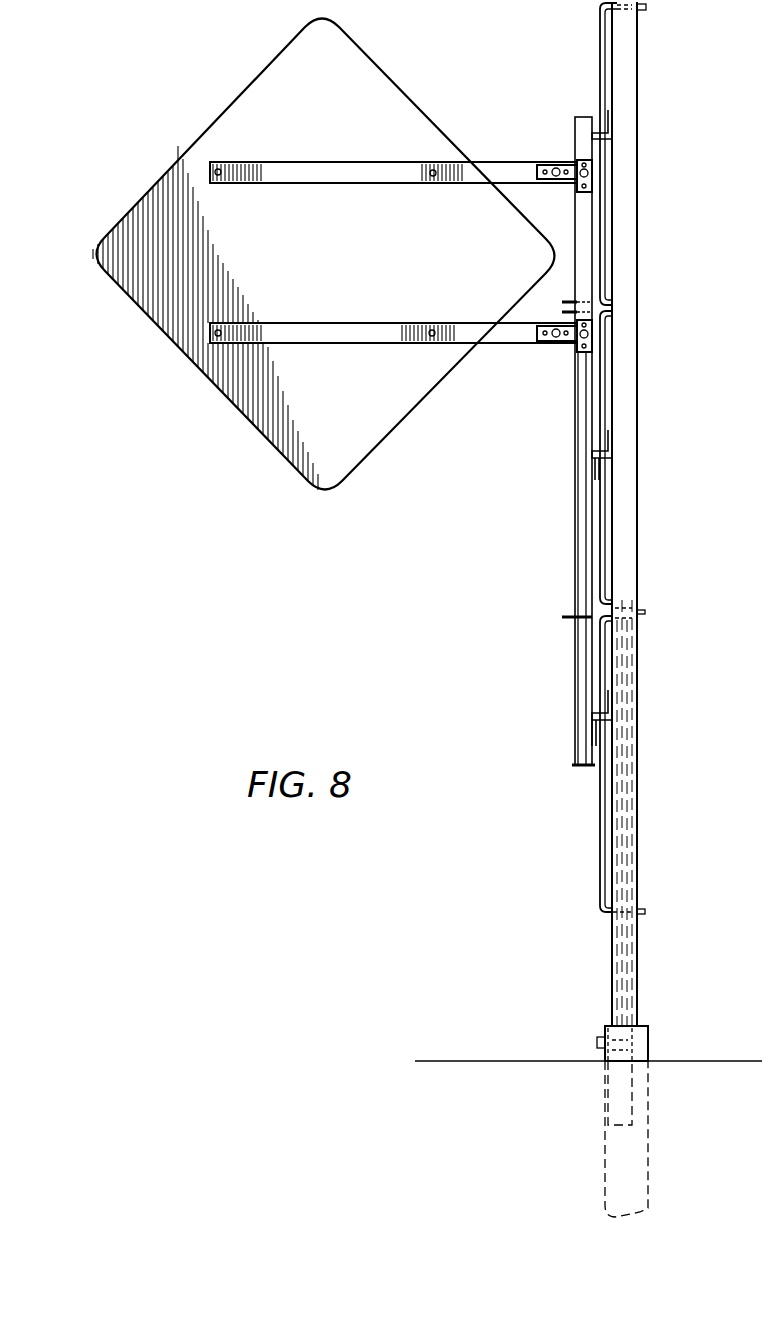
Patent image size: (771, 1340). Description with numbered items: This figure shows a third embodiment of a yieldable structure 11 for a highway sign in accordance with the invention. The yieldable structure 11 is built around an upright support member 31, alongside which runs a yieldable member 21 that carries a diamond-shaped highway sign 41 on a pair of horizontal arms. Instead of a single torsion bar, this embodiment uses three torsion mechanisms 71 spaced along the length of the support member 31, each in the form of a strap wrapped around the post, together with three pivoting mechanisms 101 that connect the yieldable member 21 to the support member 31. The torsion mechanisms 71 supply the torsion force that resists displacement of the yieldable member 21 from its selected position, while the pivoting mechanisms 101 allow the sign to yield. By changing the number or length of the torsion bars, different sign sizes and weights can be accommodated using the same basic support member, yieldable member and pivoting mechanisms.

The yieldable structure 11 is at (424, 560).
The yieldable member 21 is at (571, 434).
The support member 31 is at (640, 714).
The highway sign 41 is at (128, 300).
The torsion mechanism 71 is at (607, 211).
The pivoting mechanism 101 is at (611, 143).